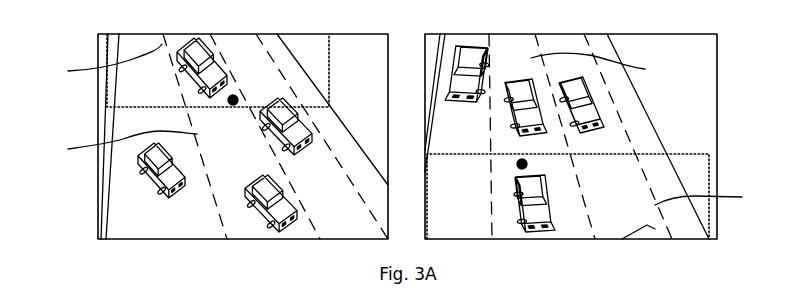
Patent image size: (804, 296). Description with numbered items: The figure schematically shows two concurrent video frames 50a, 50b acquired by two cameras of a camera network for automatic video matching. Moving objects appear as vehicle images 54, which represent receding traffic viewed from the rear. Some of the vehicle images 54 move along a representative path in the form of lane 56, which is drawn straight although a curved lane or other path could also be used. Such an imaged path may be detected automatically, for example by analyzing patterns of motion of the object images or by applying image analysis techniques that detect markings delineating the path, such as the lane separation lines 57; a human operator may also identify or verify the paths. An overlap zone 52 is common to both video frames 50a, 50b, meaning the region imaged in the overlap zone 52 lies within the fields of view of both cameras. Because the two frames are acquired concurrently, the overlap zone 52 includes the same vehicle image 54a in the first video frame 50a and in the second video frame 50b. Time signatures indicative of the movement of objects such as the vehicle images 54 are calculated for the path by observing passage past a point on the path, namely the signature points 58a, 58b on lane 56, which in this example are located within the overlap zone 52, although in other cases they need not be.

The video frame 50a is at (99, 124).
The video frame 50b is at (717, 87).
The overlap zone 52 is at (330, 63).
The vehicle images 54 is at (253, 215).
The vehicle image 54a is at (183, 77).
The lane 56 is at (356, 107).
The lane separation lines 57 is at (404, 141).
The signature point 58a is at (233, 100).
The signature point 58b is at (527, 164).